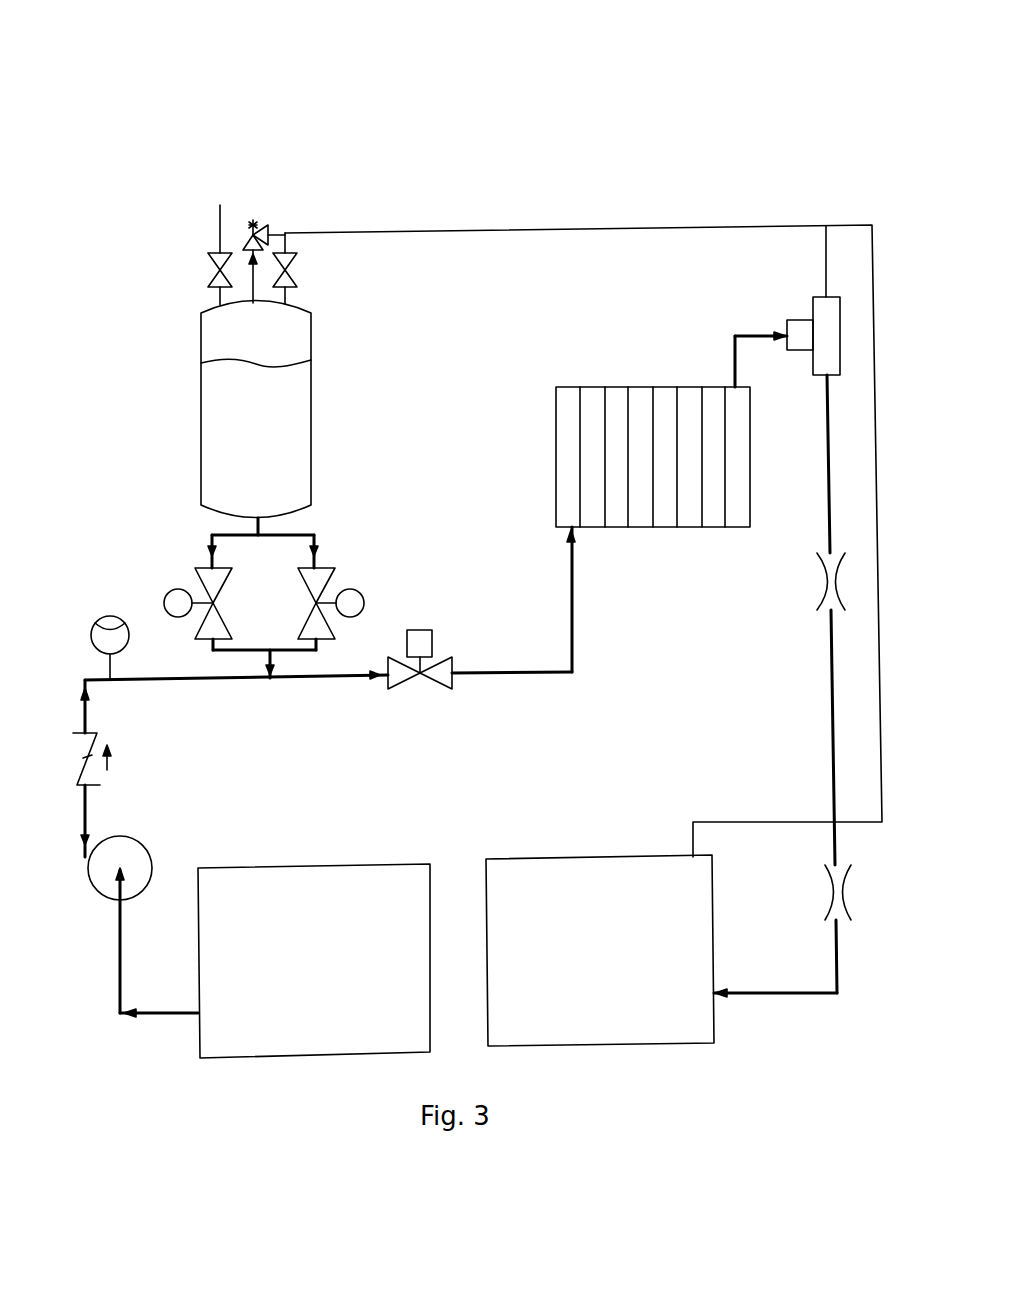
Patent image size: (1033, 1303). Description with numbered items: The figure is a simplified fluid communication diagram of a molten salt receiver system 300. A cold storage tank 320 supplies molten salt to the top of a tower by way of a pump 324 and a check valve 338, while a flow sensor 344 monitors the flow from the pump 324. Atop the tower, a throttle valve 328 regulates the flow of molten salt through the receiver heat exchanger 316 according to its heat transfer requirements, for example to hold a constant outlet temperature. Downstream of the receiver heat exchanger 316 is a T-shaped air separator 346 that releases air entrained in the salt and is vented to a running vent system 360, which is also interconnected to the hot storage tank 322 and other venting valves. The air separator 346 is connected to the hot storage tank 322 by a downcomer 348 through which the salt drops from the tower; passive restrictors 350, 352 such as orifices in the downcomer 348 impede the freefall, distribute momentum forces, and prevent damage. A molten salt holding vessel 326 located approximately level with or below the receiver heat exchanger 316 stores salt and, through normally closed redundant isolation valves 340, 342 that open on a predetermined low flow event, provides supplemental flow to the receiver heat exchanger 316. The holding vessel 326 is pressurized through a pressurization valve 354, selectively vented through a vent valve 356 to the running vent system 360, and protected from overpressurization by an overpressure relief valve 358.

The molten salt receiver system 300 is at (466, 157).
The receiver heat exchanger 316 is at (628, 385).
The cold storage tank 320 is at (314, 865).
The hot storage tank 322 is at (545, 855).
The pump 324 is at (121, 837).
The molten salt holding vessel 326 is at (199, 362).
The throttle valve 328 is at (418, 629).
The check valve 338 is at (98, 743).
The isolation valve 340 is at (331, 566).
The isolation valve 342 is at (197, 570).
The flow sensor 344 is at (107, 621).
The air separator 346 is at (792, 318).
The downcomer 348 is at (831, 702).
The passive restrictor 350 is at (824, 582).
The passive restrictor 352 is at (827, 882).
The pressurization valve 354 is at (214, 258).
The vent valve 356 is at (293, 259).
The overpressure relief valve 358 is at (263, 230).
The running vent system 360 is at (601, 226).